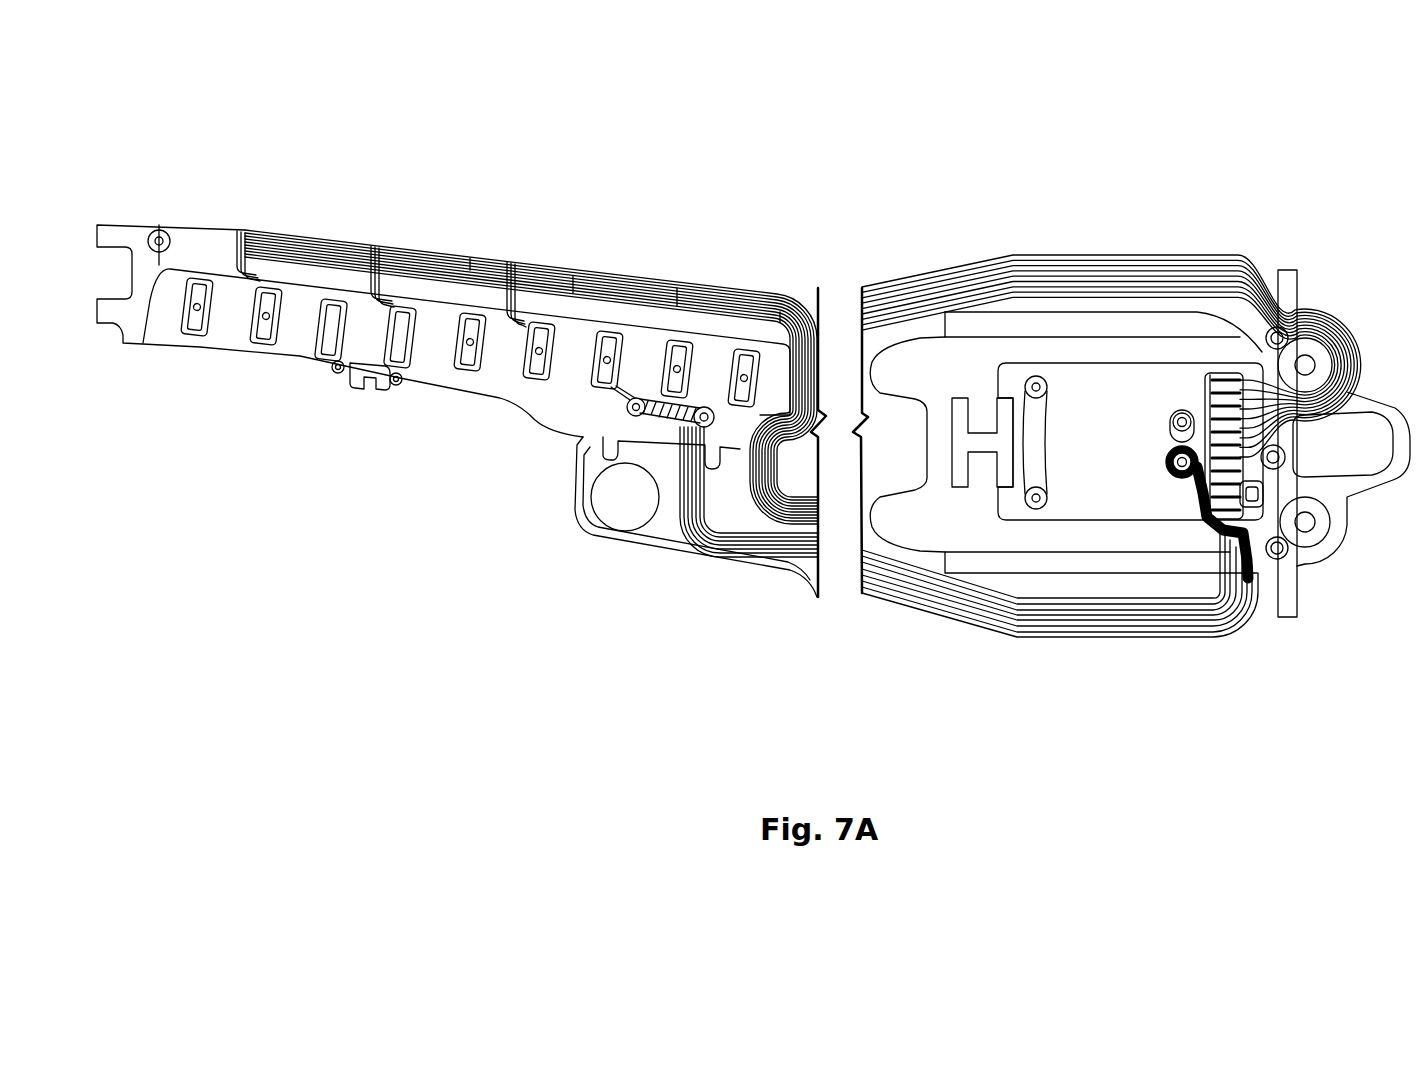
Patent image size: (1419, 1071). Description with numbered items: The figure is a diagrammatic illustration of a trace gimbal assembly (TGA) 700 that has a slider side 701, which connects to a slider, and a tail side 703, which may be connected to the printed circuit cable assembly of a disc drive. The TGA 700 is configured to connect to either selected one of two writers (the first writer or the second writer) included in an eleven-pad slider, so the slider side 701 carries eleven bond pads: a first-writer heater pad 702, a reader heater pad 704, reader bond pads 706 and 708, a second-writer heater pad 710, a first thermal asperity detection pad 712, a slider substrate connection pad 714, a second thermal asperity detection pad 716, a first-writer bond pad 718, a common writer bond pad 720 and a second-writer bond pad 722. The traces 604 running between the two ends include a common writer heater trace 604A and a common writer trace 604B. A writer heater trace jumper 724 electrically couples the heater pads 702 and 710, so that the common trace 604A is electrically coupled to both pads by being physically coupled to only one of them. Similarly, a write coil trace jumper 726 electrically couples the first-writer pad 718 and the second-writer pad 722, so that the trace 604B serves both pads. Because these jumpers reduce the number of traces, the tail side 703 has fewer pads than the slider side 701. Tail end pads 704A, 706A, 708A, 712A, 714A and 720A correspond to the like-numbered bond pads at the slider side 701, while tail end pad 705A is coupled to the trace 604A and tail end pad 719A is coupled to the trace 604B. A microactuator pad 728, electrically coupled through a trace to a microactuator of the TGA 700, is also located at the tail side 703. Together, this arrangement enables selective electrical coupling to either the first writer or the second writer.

The trace gimbal assembly 700 is at (1284, 150).
The trace 604 is at (793, 275).
The common writer heater trace 604A is at (1104, 297).
The common writer trace 604B is at (1152, 596).
The slider side 701 is at (1148, 660).
The tail side 703 is at (710, 628).
The heater for Writer 1 (Hw1) pad 702 is at (1236, 380).
The heater for reader (Hr) pad 704 is at (1236, 393).
The reader bond pad (R−) 706 is at (1236, 406).
The reader bond pad (R+) 708 is at (1236, 419).
The heater for Writer 2 (Hw2) pad 710 is at (1236, 432).
The first thermal asperity detection pad (Tx) 712 is at (1236, 445).
The slider substrate connection (G) pad 714 is at (1236, 458).
The second thermal asperity detection pad (Ty) 716 is at (1236, 471).
The Writer 1 bond pad (W1+) 718 is at (1236, 484).
The common writer bond pad (W1−) 720 is at (1236, 497).
The Writer 2 bond pad (W2+) 722 is at (1236, 510).
The writer heater trace jumper (Hwj) 724 is at (1228, 383).
The write coil trace jumper (Wj) 726 is at (1263, 492).
The microactuator pad 728 is at (742, 398).
The tail end pad 705A is at (195, 322).
The tail end pad 704A is at (263, 335).
The tail end pad 706A is at (333, 343).
The tail end pad 708A is at (402, 350).
The tail end pad 712A is at (467, 360).
The tail end pad 714A is at (537, 372).
The tail end pad 720A is at (605, 385).
The tail end pad 719A is at (675, 397).